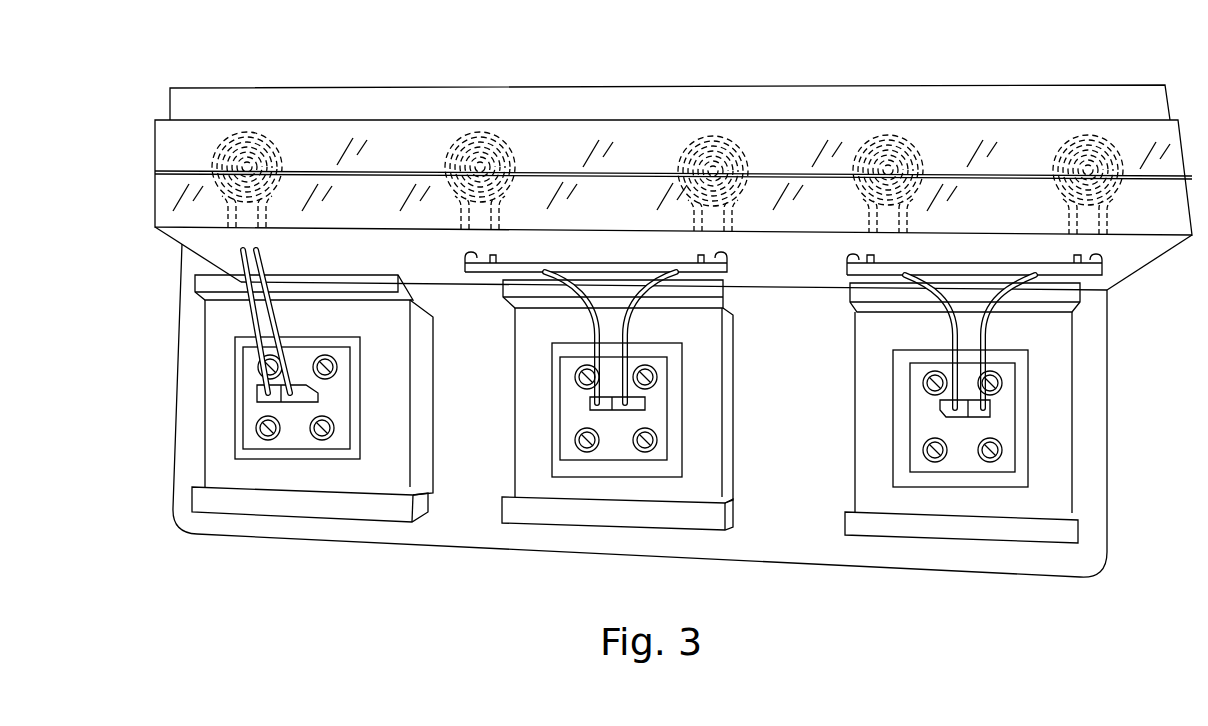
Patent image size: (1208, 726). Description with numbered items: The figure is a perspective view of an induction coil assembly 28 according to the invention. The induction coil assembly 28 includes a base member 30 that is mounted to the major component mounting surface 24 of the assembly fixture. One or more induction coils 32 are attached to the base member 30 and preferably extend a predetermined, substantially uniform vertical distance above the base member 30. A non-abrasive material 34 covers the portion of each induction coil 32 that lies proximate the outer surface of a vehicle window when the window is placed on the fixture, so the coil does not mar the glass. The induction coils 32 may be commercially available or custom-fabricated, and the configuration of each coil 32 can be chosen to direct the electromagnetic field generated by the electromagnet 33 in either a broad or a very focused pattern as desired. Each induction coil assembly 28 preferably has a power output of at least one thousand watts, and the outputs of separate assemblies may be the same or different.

The major component mounting surface 24 is at (348, 422).
The induction coil assembly 28 is at (755, 580).
The base member 30 is at (333, 450).
The induction coil 32 is at (250, 150).
The electromagnet 33 is at (420, 470).
The non-abrasive material 34 is at (155, 196).